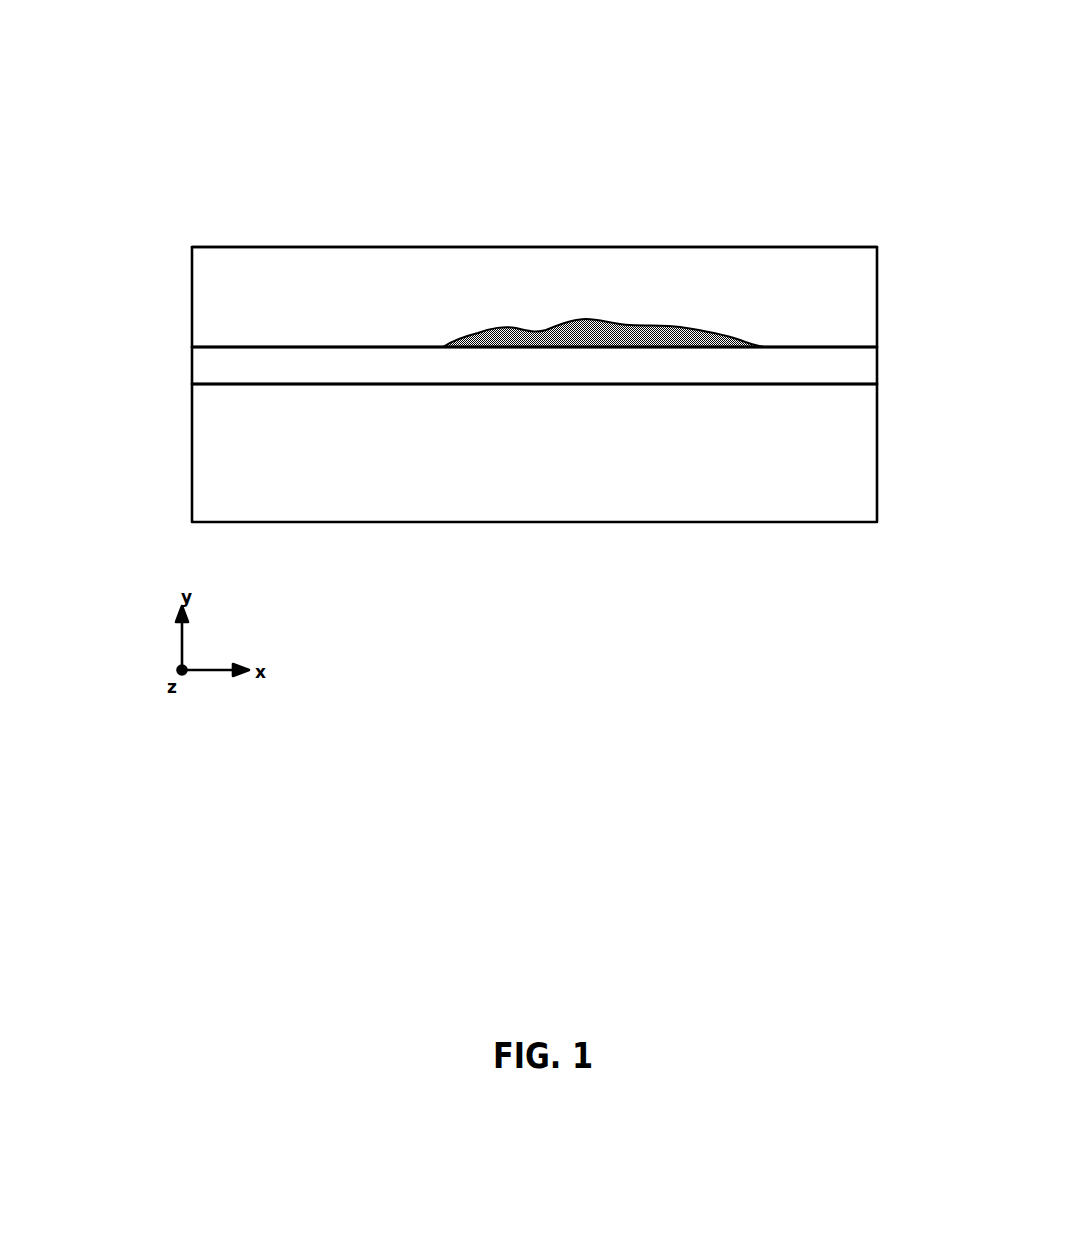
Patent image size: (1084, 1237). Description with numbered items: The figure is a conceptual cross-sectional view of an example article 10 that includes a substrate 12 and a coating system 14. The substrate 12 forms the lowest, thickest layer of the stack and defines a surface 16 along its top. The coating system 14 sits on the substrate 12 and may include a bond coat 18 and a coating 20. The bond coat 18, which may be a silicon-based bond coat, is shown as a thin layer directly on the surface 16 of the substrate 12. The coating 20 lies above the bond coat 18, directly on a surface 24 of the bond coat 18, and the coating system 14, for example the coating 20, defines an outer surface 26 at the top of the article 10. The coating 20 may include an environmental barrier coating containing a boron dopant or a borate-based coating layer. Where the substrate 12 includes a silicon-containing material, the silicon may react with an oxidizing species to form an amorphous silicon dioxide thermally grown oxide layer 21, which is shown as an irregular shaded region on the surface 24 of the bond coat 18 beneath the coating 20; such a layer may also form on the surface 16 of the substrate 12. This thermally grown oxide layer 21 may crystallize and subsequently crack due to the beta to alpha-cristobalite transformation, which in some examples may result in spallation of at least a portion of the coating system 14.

The article 10 is at (163, 79).
The substrate 12 is at (212, 471).
The coating system 14 is at (176, 325).
The surface 16 is at (861, 384).
The bond coat 18 is at (212, 366).
The coating 20 is at (212, 282).
The thermally grown oxide layer 21 is at (487, 332).
The surface 24 is at (861, 347).
The outer surface 26 is at (861, 247).